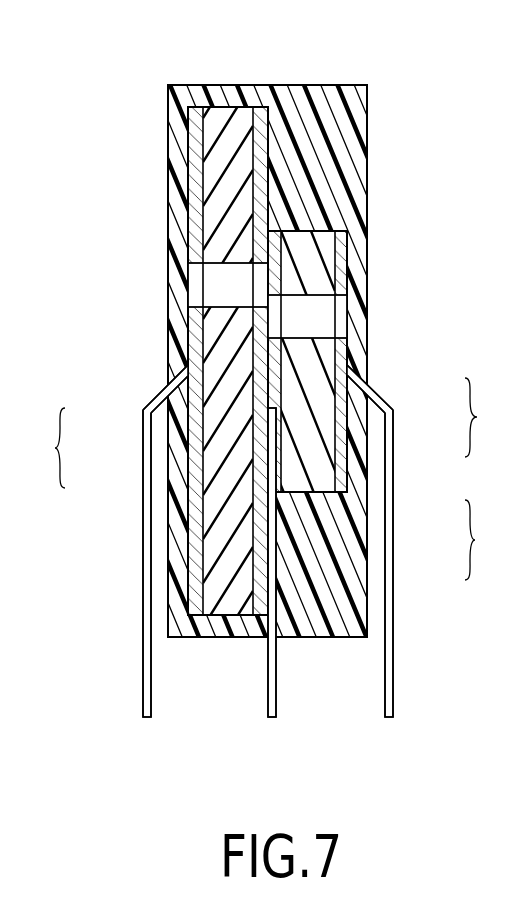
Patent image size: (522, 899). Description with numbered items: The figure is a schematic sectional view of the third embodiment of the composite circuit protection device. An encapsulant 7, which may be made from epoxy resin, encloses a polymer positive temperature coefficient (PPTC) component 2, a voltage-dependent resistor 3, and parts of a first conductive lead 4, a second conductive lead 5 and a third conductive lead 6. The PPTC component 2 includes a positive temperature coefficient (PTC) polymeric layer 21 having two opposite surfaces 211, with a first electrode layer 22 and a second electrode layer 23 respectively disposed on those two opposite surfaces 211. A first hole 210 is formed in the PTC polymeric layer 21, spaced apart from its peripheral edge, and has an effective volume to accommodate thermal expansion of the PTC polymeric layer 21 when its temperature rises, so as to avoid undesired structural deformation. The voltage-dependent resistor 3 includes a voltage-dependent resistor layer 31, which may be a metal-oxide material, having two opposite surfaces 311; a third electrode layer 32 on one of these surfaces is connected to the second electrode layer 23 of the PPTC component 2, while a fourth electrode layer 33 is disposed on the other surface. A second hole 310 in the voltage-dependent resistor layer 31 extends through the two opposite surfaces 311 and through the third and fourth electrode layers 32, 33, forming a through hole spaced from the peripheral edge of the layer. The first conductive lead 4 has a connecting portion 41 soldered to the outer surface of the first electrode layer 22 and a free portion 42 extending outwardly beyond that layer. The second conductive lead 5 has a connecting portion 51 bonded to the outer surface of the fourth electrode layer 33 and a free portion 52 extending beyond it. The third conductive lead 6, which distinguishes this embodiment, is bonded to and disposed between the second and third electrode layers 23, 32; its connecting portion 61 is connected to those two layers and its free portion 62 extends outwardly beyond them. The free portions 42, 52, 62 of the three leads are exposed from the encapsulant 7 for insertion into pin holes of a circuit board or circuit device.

The encapsulant 7 is at (363, 93).
The polymer positive temperature coefficient (PPTC) component 2 is at (180, 245).
The positive temperature coefficient (PTC) polymeric layer 21 is at (227, 112).
The first electrode layer 22 is at (196, 112).
The second electrode layer 23 is at (263, 105).
The first hole 210 is at (220, 296).
The two opposite surfaces 211 is at (252, 280).
The voltage-dependent resistor 3 is at (351, 257).
The voltage-dependent resistor layer 31 is at (313, 230).
The third electrode layer 32 is at (290, 229).
The fourth electrode layer 33 is at (343, 230).
The second hole 310 is at (313, 326).
The two opposite surfaces 311 is at (335, 312).
The first conductive lead 4 is at (111, 541).
The connecting portion 41 is at (165, 388).
The free portion 42 is at (144, 498).
The second conductive lead 5 is at (419, 541).
The connecting portion 51 is at (375, 395).
The free portion 52 is at (394, 448).
The third conductive lead 6 is at (380, 562).
The connecting portion 61 is at (272, 445).
The free portion 62 is at (272, 607).